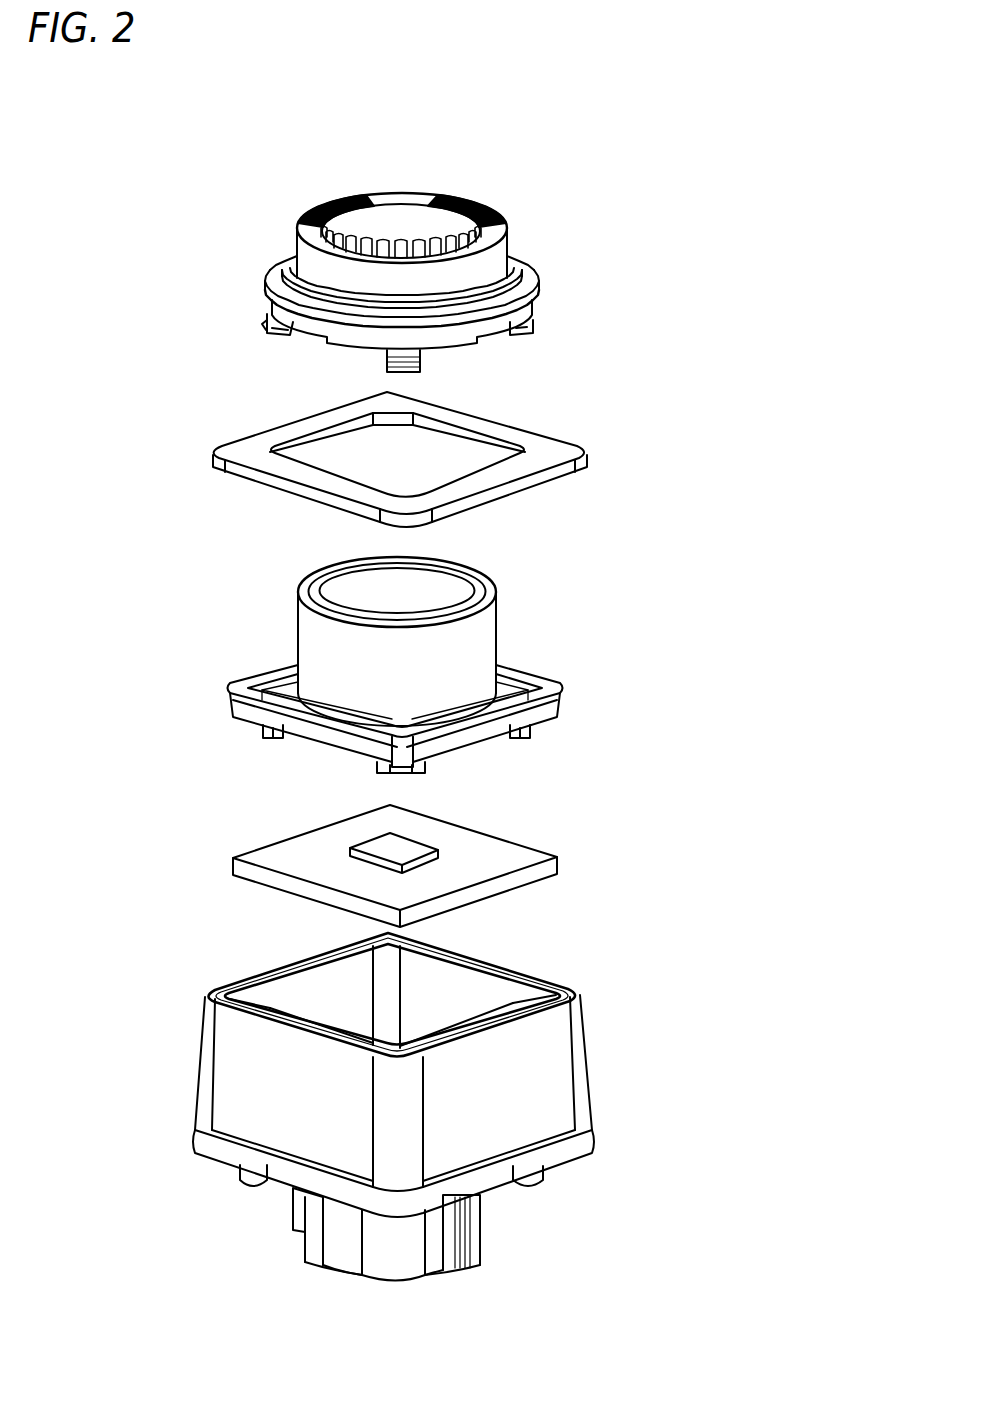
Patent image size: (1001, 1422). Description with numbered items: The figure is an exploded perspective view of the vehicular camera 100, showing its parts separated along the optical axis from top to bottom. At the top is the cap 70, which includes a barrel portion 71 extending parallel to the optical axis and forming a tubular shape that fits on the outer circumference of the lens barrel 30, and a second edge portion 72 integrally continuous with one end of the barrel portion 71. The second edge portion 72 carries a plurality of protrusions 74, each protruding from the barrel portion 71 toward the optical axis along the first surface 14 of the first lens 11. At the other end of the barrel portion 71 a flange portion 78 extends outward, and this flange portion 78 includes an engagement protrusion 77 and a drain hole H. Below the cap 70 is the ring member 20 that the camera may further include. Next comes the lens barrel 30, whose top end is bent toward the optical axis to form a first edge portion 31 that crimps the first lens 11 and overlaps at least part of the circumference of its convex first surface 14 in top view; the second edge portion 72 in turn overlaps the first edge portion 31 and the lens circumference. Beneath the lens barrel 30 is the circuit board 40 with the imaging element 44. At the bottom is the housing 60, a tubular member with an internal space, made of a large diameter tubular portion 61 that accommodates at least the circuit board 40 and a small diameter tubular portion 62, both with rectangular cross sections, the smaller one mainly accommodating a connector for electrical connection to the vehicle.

The vehicular camera 100 is at (760, 252).
The cap 70 is at (635, 168).
The barrel portion 71 is at (508, 268).
The second edge portion 72 is at (507, 237).
The protrusions 74 is at (430, 232).
The engagement protrusion 77 is at (535, 333).
The flange portion 78 is at (538, 301).
The drain hole H is at (312, 333).
The ring member 20 is at (548, 432).
The lens barrel 30 is at (495, 637).
The first edge portion 31 is at (303, 587).
The first lens 11 is at (355, 566).
The first surface 14 is at (438, 587).
The circuit board 40 is at (492, 833).
The imaging element 44 is at (365, 840).
The housing 60 is at (707, 1012).
The large diameter tubular portion 61 is at (580, 1075).
The small diameter tubular portion 62 is at (482, 1227).